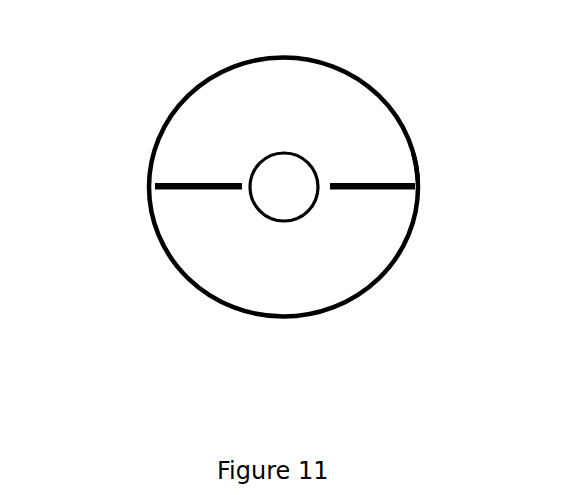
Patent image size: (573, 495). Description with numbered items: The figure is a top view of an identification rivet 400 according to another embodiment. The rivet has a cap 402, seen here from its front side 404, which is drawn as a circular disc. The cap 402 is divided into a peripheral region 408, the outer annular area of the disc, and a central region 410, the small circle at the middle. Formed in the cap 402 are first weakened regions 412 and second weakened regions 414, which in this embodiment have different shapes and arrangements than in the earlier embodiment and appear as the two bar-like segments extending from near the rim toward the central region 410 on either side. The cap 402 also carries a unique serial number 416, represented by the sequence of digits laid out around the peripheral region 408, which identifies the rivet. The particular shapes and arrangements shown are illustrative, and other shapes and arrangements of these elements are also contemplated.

The identification rivet 400 is at (77, 36).
The cap 402 is at (373, 86).
The front side 404 is at (412, 159).
The peripheral region 408 is at (186, 121).
The central region 410 is at (272, 220).
The first weakened regions 412 is at (157, 183).
The second weakened regions 414 is at (403, 203).
The unique serial number 416 is at (167, 217).